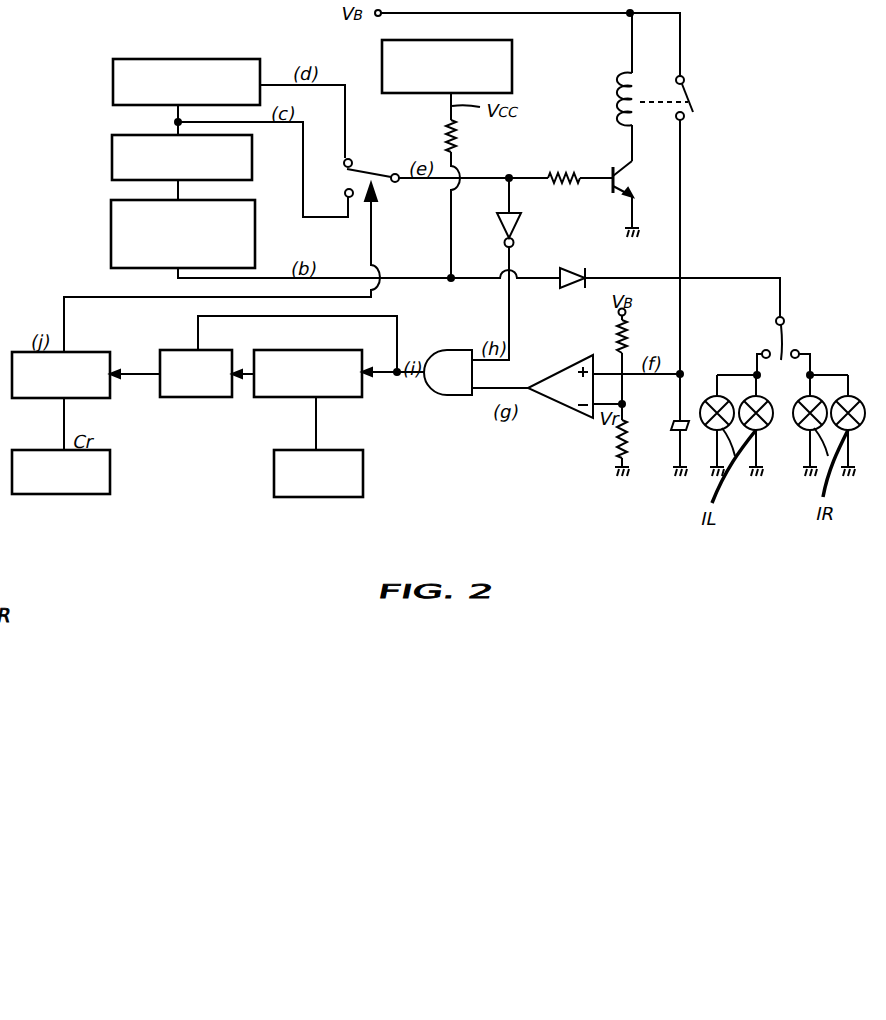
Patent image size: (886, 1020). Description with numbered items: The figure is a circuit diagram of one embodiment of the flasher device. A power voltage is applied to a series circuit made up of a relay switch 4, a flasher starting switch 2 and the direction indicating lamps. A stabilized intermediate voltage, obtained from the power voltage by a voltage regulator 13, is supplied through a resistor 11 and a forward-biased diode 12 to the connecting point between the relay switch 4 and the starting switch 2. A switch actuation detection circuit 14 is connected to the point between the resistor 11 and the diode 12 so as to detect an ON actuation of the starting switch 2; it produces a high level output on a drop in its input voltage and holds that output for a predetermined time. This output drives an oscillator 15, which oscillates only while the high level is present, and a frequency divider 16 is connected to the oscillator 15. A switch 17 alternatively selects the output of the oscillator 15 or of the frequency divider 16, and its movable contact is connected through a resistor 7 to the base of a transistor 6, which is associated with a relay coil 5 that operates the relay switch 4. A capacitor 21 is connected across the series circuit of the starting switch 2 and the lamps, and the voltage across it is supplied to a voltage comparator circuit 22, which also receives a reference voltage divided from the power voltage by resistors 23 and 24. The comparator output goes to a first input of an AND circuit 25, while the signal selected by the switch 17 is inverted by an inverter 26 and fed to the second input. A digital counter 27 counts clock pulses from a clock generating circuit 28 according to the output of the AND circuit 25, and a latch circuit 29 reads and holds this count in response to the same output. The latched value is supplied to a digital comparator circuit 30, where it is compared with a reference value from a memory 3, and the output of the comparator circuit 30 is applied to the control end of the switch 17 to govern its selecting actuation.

The flasher starting switch 2 is at (790, 334).
The memory 3 is at (112, 477).
The relay switch 4 is at (692, 104).
The relay coil 5 is at (622, 105).
The transistor 6 is at (622, 181).
The resistor 7 is at (565, 186).
The resistor 11 is at (460, 143).
The diode 12 is at (567, 284).
The voltage regulator 13 is at (513, 66).
The switch actuation detection circuit 14 is at (110, 225).
The oscillator 15 is at (112, 160).
The frequency divider 16 is at (110, 88).
The switch 17 is at (365, 167).
The capacitor 21 is at (673, 428).
The voltage comparator circuit 22 is at (562, 411).
The resistor 23 is at (627, 342).
The resistor 24 is at (628, 432).
The AND circuit 25 is at (448, 397).
The inverter 26 is at (518, 228).
The digital counter 27 is at (275, 398).
The clock generating circuit 28 is at (320, 497).
The latch circuit 29 is at (200, 398).
The digital comparator circuit 30 is at (80, 350).